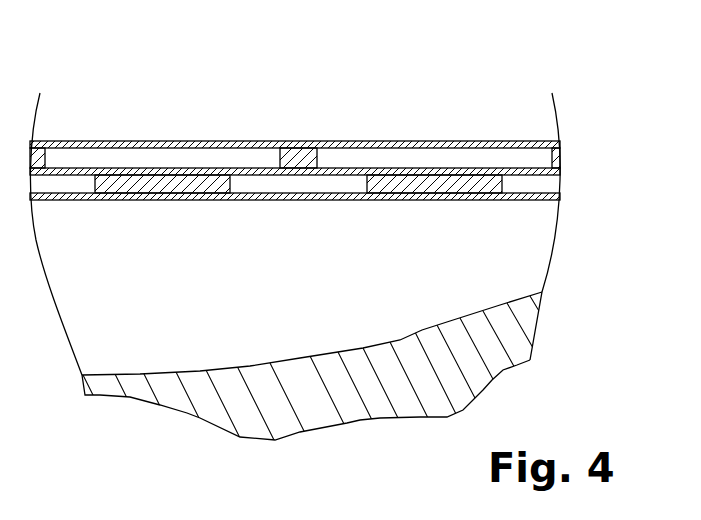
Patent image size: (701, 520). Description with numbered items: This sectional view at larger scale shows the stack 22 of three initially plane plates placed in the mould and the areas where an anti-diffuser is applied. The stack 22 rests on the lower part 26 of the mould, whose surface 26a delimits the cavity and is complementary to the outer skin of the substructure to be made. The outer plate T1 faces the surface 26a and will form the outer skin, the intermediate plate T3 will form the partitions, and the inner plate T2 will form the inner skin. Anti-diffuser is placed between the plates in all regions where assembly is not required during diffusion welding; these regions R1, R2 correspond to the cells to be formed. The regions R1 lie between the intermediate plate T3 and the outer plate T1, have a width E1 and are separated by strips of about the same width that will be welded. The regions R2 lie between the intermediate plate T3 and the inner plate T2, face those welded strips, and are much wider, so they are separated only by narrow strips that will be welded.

The stack of plates 22 is at (509, 115).
The outer plate T1 is at (332, 200).
The inner plate T2 is at (247, 142).
The intermediate plate T3 is at (77, 168).
The regions R1 is at (68, 185).
The regions R2 is at (162, 158).
The lower part of the mould 26 is at (423, 378).
The surface 26a is at (422, 330).